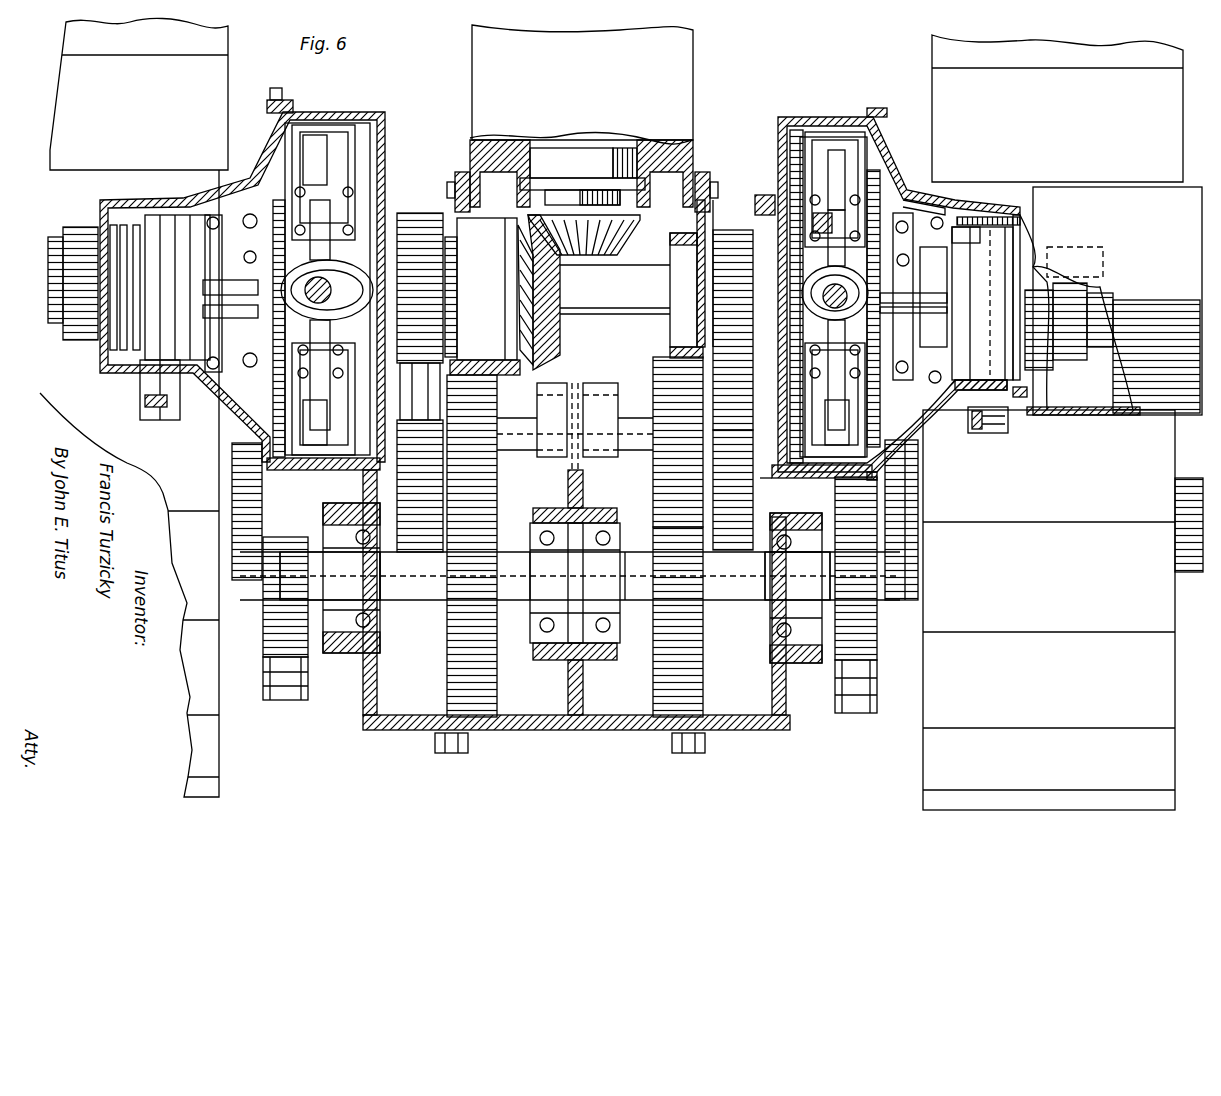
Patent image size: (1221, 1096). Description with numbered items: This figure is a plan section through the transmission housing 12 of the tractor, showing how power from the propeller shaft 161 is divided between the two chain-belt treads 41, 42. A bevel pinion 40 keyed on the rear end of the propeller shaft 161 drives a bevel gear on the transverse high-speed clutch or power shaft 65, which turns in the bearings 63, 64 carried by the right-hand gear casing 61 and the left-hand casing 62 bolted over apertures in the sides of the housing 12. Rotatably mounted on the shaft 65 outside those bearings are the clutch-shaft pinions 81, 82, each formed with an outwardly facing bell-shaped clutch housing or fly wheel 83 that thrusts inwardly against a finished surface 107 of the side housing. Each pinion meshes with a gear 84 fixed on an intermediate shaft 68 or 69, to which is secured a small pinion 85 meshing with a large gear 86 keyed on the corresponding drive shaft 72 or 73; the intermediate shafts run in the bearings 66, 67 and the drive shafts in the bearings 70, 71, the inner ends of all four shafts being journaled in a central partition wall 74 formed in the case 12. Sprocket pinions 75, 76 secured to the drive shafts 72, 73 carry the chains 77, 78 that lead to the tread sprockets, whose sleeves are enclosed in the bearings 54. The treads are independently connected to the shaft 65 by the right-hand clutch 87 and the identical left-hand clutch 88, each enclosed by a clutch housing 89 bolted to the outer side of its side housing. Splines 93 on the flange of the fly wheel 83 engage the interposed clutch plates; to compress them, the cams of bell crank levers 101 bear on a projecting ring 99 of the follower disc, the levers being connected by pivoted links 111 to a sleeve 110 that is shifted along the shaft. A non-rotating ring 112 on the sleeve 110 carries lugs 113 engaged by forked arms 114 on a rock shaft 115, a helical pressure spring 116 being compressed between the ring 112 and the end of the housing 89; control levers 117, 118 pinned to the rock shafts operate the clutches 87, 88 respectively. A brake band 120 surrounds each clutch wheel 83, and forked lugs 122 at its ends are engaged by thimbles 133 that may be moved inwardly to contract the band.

The housing 12 is at (538, 728).
The bevel pinion 40 is at (615, 245).
The chain-belt tread 41 is at (1162, 598).
The chain-belt tread 42 is at (210, 727).
The bearings 54 is at (900, 452).
The right-hand gear casing 61 is at (748, 735).
The left-hand casing 62 is at (405, 727).
The bearing 63 is at (678, 258).
The bearing 64 is at (487, 235).
The high-speed clutch or power shaft 65 is at (592, 308).
The bearing 66 is at (762, 478).
The bearing 67 is at (398, 458).
The intermediate shaft 68 is at (630, 448).
The intermediate shaft 69 is at (518, 445).
The bearing 70 is at (773, 640).
The bearing 71 is at (372, 628).
The drive shaft 72 is at (797, 576).
The drive shaft 73 is at (330, 576).
The central partition wall 74 is at (583, 685).
The sprocket pinion 75 is at (868, 605).
The sprocket pinion 76 is at (285, 620).
The chain 77 is at (872, 680).
The chain 78 is at (308, 680).
The pinion 81 is at (730, 235).
The pinion 82 is at (412, 240).
The bell-shaped clutch housing or fly wheel 83 is at (797, 175).
The gear 84 is at (745, 512).
The small pinion 85 is at (658, 378).
The large gear 86 is at (690, 630).
The right-hand clutch 87 is at (922, 171).
The left-hand clutch 88 is at (233, 158).
The clutch housing 89 is at (930, 405).
The splines 93 is at (880, 190).
The projecting ring 99 is at (915, 215).
The bell crank levers 101 is at (925, 192).
The finished surface 107 is at (760, 190).
The rotatable sleeve 110 is at (1000, 215).
The pivoted links 111 is at (935, 240).
The ring 112 is at (960, 270).
The lugs 113 is at (975, 240).
The forked arms 114 is at (960, 250).
The rock shaft 115 is at (1040, 397).
The helical pressure spring 116 is at (1030, 270).
The control lever 117 is at (988, 425).
The control lever 118 is at (165, 415).
The brake band 120 is at (813, 135).
The forked lugs 122 is at (817, 222).
The thimble 133 is at (842, 152).
The propeller shaft 161 is at (568, 200).